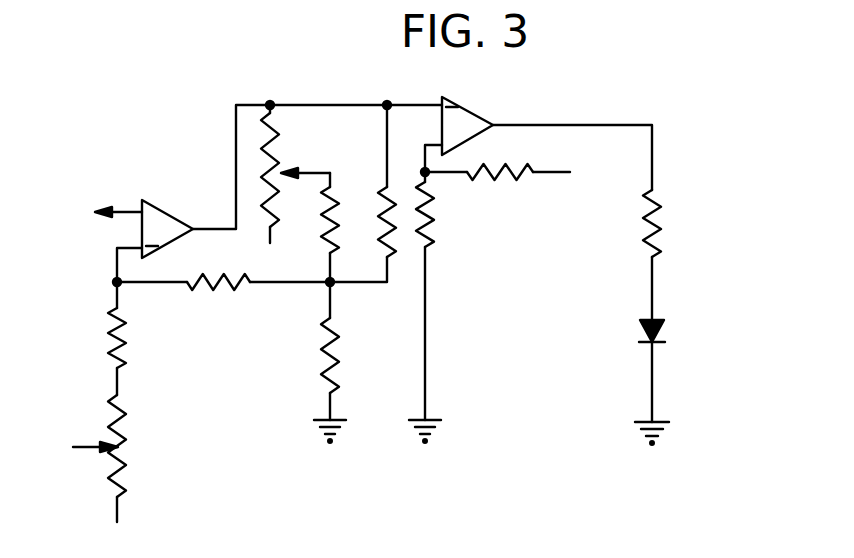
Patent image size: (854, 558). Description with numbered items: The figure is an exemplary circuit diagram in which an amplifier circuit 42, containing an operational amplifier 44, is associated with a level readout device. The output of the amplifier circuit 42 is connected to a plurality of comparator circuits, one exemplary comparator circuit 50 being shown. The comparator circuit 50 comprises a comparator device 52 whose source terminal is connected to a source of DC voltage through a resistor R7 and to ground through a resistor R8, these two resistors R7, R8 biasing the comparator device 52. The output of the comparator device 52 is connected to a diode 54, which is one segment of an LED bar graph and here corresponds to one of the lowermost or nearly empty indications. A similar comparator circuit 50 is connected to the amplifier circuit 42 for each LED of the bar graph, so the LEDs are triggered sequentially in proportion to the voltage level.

The amplifier circuit 42 is at (257, 309).
The operational amplifier 44 is at (147, 211).
The comparator circuit 50 is at (489, 294).
The comparator device 52 is at (463, 78).
The diode 54 is at (660, 320).
The resistor R7 is at (497, 196).
The resistor R8 is at (433, 223).